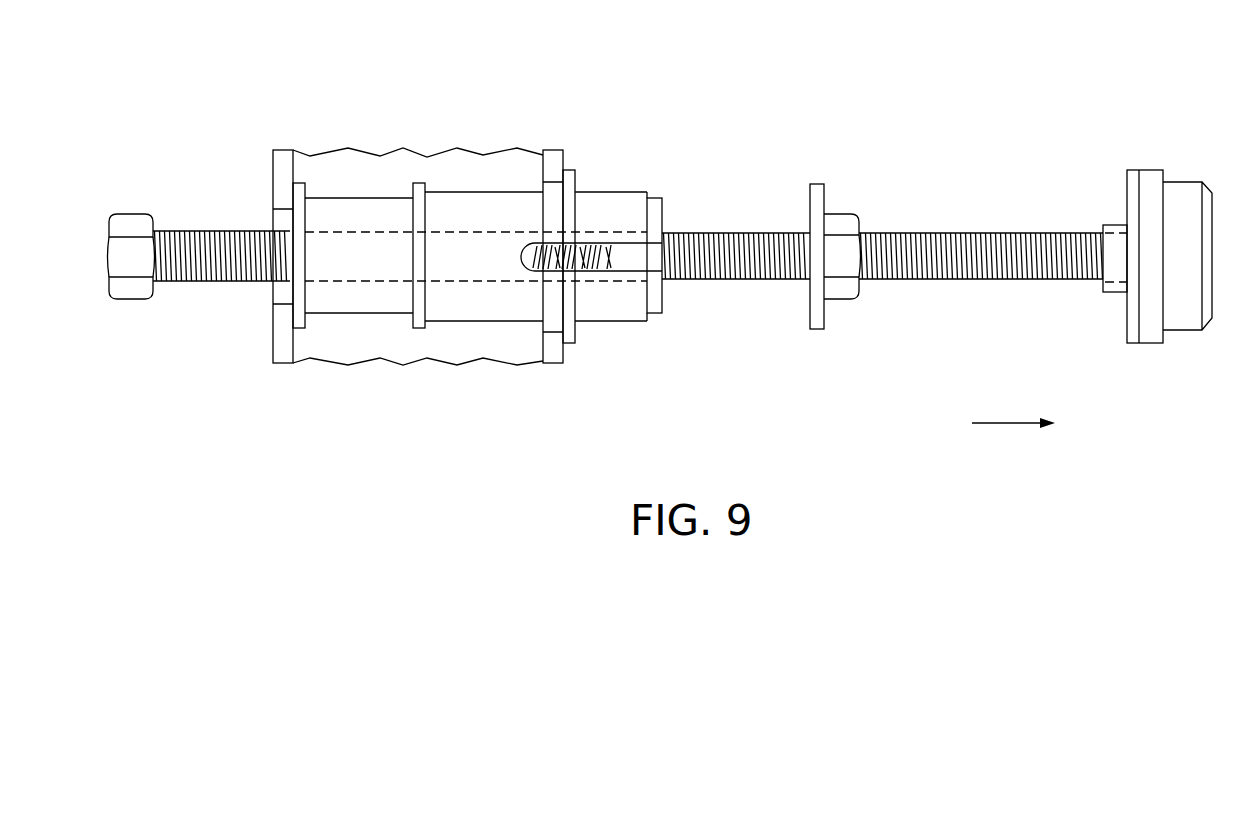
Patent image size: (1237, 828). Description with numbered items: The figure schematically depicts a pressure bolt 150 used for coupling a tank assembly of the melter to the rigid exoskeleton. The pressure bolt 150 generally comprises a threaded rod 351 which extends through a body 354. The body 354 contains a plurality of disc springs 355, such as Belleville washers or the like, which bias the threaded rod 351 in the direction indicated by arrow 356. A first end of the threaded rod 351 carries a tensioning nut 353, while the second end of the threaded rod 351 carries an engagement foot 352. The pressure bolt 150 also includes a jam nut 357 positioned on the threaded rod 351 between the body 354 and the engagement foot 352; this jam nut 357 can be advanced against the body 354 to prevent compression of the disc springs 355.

The pressure bolt 150 is at (458, 112).
The threaded rod 351 is at (740, 281).
The engagement foot 352 is at (1148, 170).
The tensioning nut 353 is at (140, 214).
The body 354 is at (463, 322).
The disc springs 355 is at (603, 243).
The arrow 356 is at (1008, 423).
The jam nut 357 is at (848, 180).